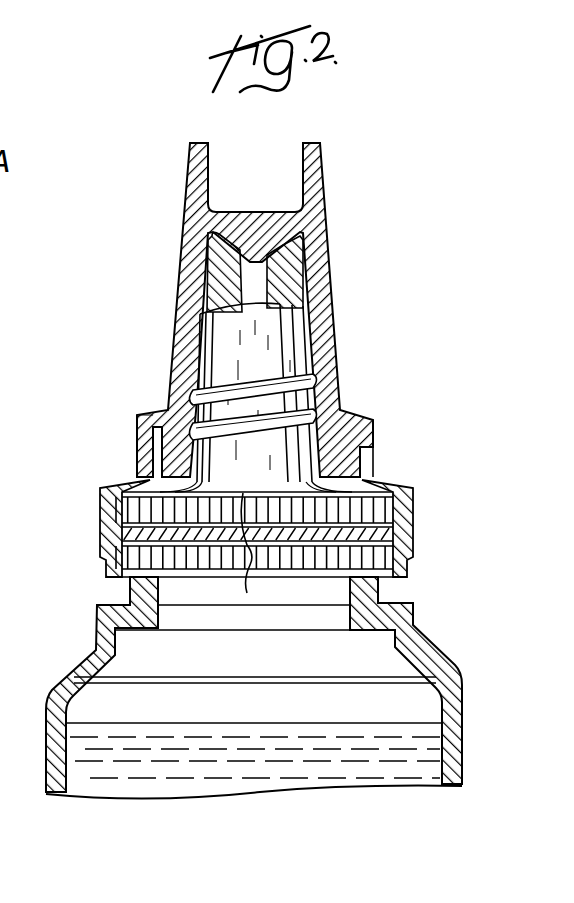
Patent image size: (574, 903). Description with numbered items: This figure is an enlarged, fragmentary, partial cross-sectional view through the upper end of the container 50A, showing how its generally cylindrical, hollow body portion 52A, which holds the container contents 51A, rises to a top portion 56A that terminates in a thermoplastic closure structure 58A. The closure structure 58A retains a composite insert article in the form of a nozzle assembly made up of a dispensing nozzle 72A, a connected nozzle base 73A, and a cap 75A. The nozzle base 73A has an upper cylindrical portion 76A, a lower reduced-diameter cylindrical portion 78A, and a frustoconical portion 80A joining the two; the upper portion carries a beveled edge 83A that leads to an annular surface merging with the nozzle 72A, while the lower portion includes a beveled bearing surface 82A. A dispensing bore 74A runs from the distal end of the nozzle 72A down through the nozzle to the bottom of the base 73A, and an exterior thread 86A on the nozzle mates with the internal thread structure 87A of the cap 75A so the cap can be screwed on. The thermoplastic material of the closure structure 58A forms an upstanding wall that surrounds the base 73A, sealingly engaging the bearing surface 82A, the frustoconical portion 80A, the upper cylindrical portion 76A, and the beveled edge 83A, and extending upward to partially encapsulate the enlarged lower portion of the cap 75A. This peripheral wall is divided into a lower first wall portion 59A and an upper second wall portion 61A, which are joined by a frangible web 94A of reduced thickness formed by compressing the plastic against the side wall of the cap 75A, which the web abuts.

The cap 75A is at (318, 186).
The dispensing bore 74A is at (257, 278).
The nozzle 72A is at (277, 327).
The exterior thread 86A is at (283, 377).
The internal thread structure 87A is at (315, 418).
The closure structure 58A is at (151, 411).
The second wall portion 61A is at (137, 420).
The frangible web 94A is at (147, 440).
The first wall portion 59A is at (133, 467).
The beveled edge 83A is at (366, 480).
The upper cylindrical portion 76A is at (123, 501).
The frustoconical portion 80A is at (145, 535).
The lower cylindrical portion 78A is at (147, 553).
The nozzle base 73A is at (279, 552).
The bearing surface 82A is at (187, 578).
The container 50A is at (42, 678).
The top portion 56A is at (445, 652).
The body portion 52A is at (60, 792).
The container contents 51A is at (268, 766).